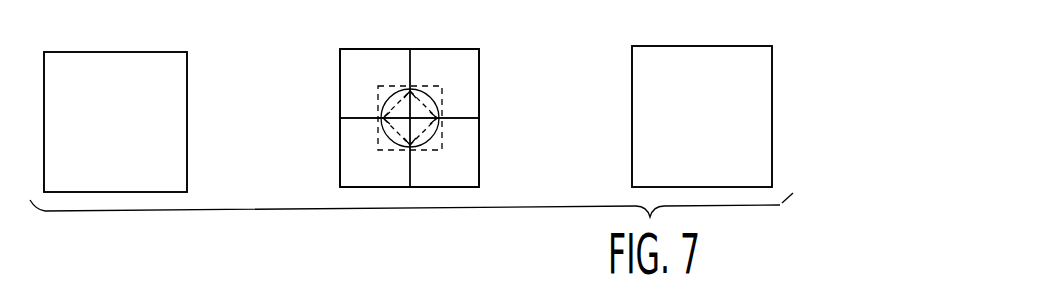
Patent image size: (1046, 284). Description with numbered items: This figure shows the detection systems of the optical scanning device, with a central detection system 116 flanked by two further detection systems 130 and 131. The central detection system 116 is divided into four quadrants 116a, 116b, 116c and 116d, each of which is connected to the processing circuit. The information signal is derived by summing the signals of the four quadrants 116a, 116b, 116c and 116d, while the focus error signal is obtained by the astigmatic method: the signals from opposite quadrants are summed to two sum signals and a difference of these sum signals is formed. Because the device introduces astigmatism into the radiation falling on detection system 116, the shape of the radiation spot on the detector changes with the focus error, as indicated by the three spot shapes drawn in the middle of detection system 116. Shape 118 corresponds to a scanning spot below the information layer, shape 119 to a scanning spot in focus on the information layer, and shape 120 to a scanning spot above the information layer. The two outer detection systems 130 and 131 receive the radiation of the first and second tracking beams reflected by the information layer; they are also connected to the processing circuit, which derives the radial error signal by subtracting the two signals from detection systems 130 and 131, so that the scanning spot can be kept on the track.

The detection system 116 is at (483, 32).
The first quadrant 116a is at (366, 76).
The second quadrant 116b is at (452, 66).
The third quadrant 116c is at (451, 178).
The fourth quadrant 116d is at (361, 177).
The radiation spot shape for scanning spot below the information layer 118 is at (445, 147).
The radiation spot shape for scanning spot in focus 119 is at (438, 111).
The radiation spot shape for scanning spot above the information layer 120 is at (441, 87).
The detection system 130 is at (162, 75).
The detection system 131 is at (659, 65).